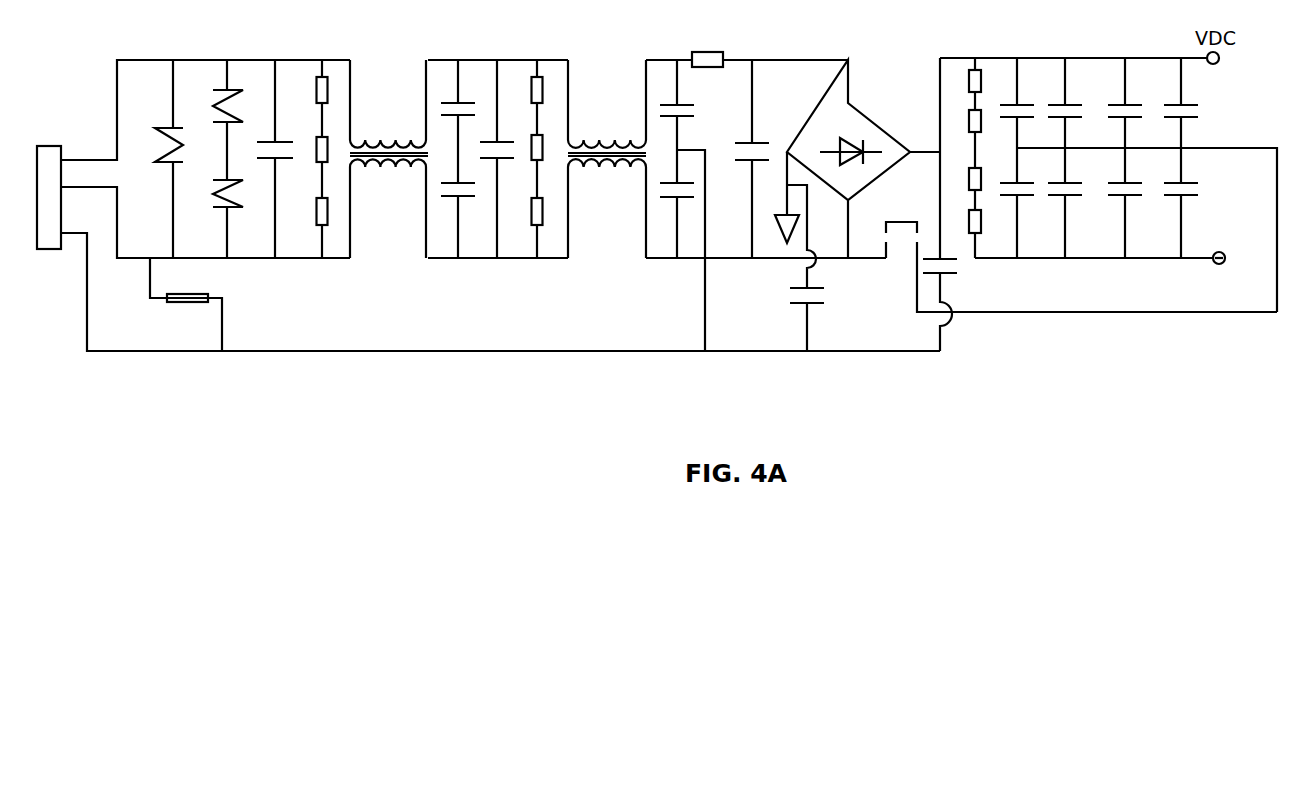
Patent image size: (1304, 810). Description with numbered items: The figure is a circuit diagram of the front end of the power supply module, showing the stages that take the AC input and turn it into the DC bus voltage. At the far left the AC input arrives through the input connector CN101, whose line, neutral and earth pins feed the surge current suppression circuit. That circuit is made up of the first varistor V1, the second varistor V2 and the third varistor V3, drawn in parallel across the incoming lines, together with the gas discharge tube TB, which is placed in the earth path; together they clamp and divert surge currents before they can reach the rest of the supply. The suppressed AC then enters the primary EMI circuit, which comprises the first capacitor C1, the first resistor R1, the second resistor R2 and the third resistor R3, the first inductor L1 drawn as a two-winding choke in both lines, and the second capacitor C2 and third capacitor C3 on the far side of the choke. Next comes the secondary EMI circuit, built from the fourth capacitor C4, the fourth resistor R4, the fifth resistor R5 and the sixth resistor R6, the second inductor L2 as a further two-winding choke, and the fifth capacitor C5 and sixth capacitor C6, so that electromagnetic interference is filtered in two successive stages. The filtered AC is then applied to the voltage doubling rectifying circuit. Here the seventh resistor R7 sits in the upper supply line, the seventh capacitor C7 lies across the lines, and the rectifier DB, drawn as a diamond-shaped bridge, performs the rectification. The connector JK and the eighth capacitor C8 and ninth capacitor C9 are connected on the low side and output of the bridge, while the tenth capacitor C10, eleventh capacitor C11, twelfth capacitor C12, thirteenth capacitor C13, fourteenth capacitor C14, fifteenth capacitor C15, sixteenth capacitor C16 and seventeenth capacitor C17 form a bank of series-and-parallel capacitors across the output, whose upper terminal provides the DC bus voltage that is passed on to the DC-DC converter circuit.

The AC input connector CN101 is at (486, 205).
The first varistor V1 is at (163, 159).
The second varistor V2 is at (215, 120).
The third varistor V3 is at (215, 219).
The first capacitor C1 is at (263, 159).
The first resistor R1 is at (310, 98).
The second resistor R2 is at (310, 167).
The third resistor R3 is at (310, 228).
The gas discharge tube TB is at (186, 304).
The first inductor L1 is at (389, 159).
The second capacitor C2 is at (453, 121).
The third capacitor C3 is at (453, 209).
The 4th capacitor C4 is at (493, 159).
The 4th resistor R4 is at (525, 97).
The 5th resistor R5 is at (526, 166).
The 6th resistor R6 is at (525, 228).
The second inductor L2 is at (607, 159).
The 7th resistor R7 is at (707, 48).
The 5th capacitor C5 is at (684, 205).
The 6th capacitor C6 is at (681, 220).
The 7th capacitor C7 is at (746, 159).
The rectifier DB is at (857, 159).
The connector JK is at (1081, 255).
The 8th capacitor C8 is at (791, 268).
The 9th capacitor C9 is at (951, 251).
The 10th capacitor C10 is at (1028, 103).
The 11th capacitor C11 is at (1028, 203).
The 12th capacitor C12 is at (1077, 103).
The 13th capacitor C13 is at (1077, 203).
The 14th capacitor C14 is at (1136, 103).
The 15th capacitor C15 is at (1136, 203).
The 16th capacitor C16 is at (1193, 103).
The 17th capacitor C17 is at (1193, 203).